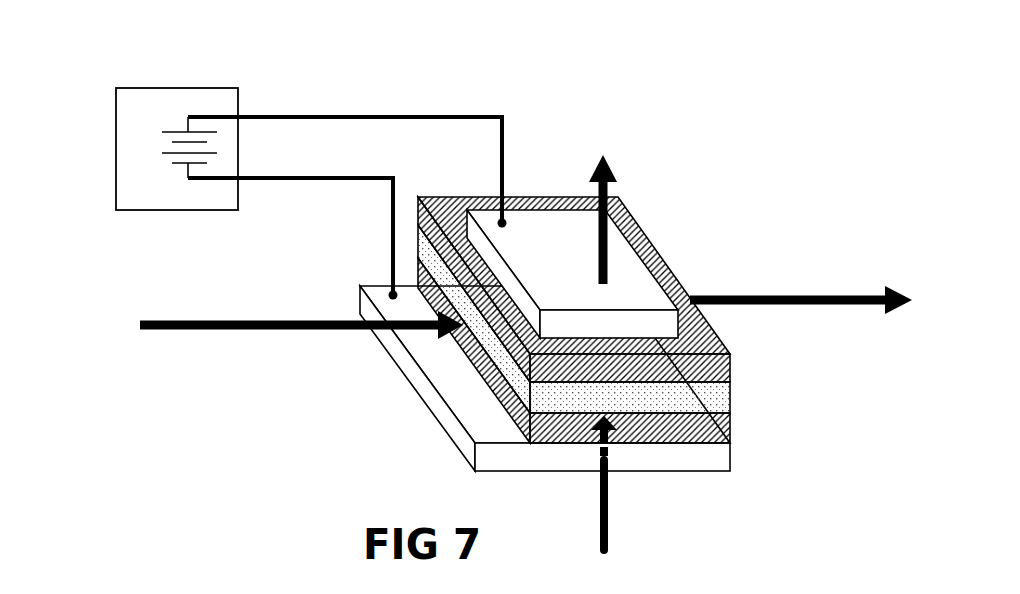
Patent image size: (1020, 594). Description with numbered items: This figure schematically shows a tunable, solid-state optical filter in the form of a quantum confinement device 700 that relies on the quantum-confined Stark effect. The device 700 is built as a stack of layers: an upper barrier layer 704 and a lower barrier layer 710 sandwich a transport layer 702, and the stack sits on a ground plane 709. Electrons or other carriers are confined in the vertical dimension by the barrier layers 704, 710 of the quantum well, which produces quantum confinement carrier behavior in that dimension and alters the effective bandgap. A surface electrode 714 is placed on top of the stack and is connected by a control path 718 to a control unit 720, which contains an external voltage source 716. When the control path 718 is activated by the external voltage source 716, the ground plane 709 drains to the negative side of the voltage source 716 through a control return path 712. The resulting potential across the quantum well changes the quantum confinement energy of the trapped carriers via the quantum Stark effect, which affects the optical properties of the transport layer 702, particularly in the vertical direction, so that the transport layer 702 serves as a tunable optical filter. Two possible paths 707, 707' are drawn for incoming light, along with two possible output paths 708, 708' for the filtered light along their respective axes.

The quantum confinement device 700 is at (601, 285).
The transport layer 702 is at (732, 400).
The upper barrier layer 704 is at (732, 361).
The path for incoming light 707 is at (301, 348).
The path for incoming light 707' is at (651, 483).
The output path for filtered light 708 is at (801, 287).
The output path for filtered light 708' is at (654, 219).
The ground plane 709 is at (443, 431).
The lower barrier layer 710 is at (730, 433).
The control return path 712 is at (263, 180).
The surface electrode 714 is at (543, 230).
The external voltage source 716 is at (232, 154).
The control path 718 is at (317, 115).
The control unit 720 is at (172, 147).